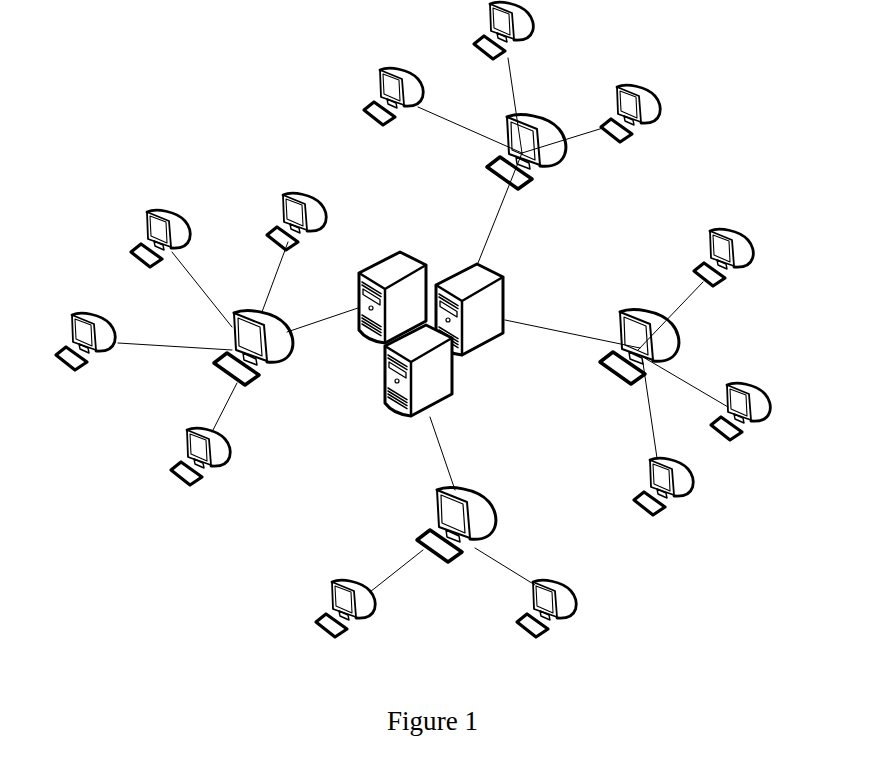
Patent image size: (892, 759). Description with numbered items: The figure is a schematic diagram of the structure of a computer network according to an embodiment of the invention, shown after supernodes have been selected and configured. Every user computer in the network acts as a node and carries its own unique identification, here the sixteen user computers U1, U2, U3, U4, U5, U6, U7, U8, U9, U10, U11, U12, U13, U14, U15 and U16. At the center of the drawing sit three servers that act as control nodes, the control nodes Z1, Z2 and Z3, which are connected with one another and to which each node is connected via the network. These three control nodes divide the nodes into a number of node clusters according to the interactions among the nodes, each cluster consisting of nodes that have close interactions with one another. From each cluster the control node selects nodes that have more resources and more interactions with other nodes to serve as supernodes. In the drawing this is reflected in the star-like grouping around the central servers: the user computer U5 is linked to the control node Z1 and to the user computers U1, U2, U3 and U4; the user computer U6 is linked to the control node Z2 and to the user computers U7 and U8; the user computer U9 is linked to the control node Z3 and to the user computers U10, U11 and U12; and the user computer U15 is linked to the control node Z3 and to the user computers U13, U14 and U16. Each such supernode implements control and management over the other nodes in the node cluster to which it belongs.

The user computer U1 is at (289, 221).
The user computer U2 is at (153, 237).
The user computer U3 is at (76, 341).
The user computer U4 is at (192, 456).
The user computer U5 is at (246, 348).
The user computer U6 is at (449, 525).
The user computer U7 is at (339, 608).
The user computer U8 is at (539, 608).
The user computer U9 is at (635, 344).
The user computer U10 is at (653, 486).
The user computer U11 is at (749, 418).
The user computer U12 is at (734, 262).
The user computer U13 is at (383, 96).
The user computer U14 is at (492, 30).
The user computer U15 is at (534, 156).
The user computer U16 is at (645, 111).
The control node Z1 is at (385, 306).
The control node Z2 is at (409, 380).
The control node Z3 is at (483, 309).